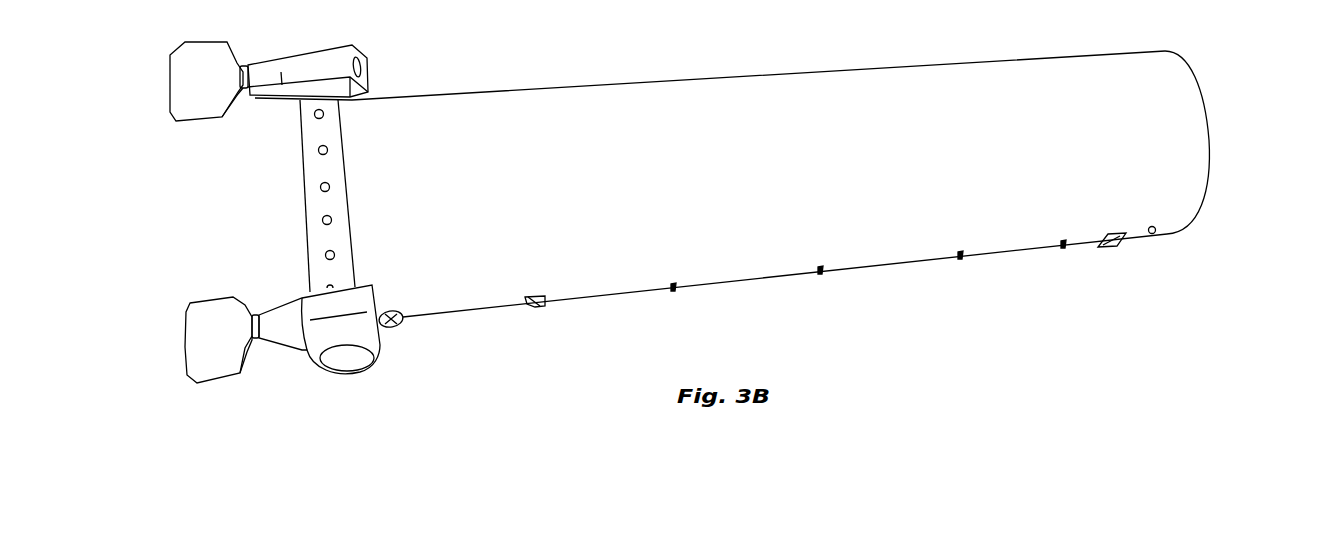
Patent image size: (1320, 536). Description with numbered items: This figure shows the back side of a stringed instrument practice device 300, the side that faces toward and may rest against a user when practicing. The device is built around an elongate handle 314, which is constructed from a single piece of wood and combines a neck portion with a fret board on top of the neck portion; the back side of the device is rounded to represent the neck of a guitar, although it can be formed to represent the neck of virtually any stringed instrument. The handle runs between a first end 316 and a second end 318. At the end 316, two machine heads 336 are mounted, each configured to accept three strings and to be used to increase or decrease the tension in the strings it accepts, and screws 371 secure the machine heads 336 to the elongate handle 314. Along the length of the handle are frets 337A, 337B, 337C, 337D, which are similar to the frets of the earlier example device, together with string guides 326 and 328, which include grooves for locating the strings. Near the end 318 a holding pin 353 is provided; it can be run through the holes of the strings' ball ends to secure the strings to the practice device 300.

The stringed instrument practice device 300 is at (170, 149).
The elongate handle 314 is at (670, 80).
The end 316 is at (302, 229).
The end 318 is at (1202, 108).
The string guide 326 is at (537, 309).
The string guide 328 is at (1110, 249).
The machine heads 336 is at (183, 73).
The fret 337A is at (673, 292).
The fret 337B is at (821, 274).
The fret 337C is at (961, 259).
The fret 337D is at (1064, 249).
The holding pin 353 is at (1160, 234).
The screws 371 is at (397, 328).